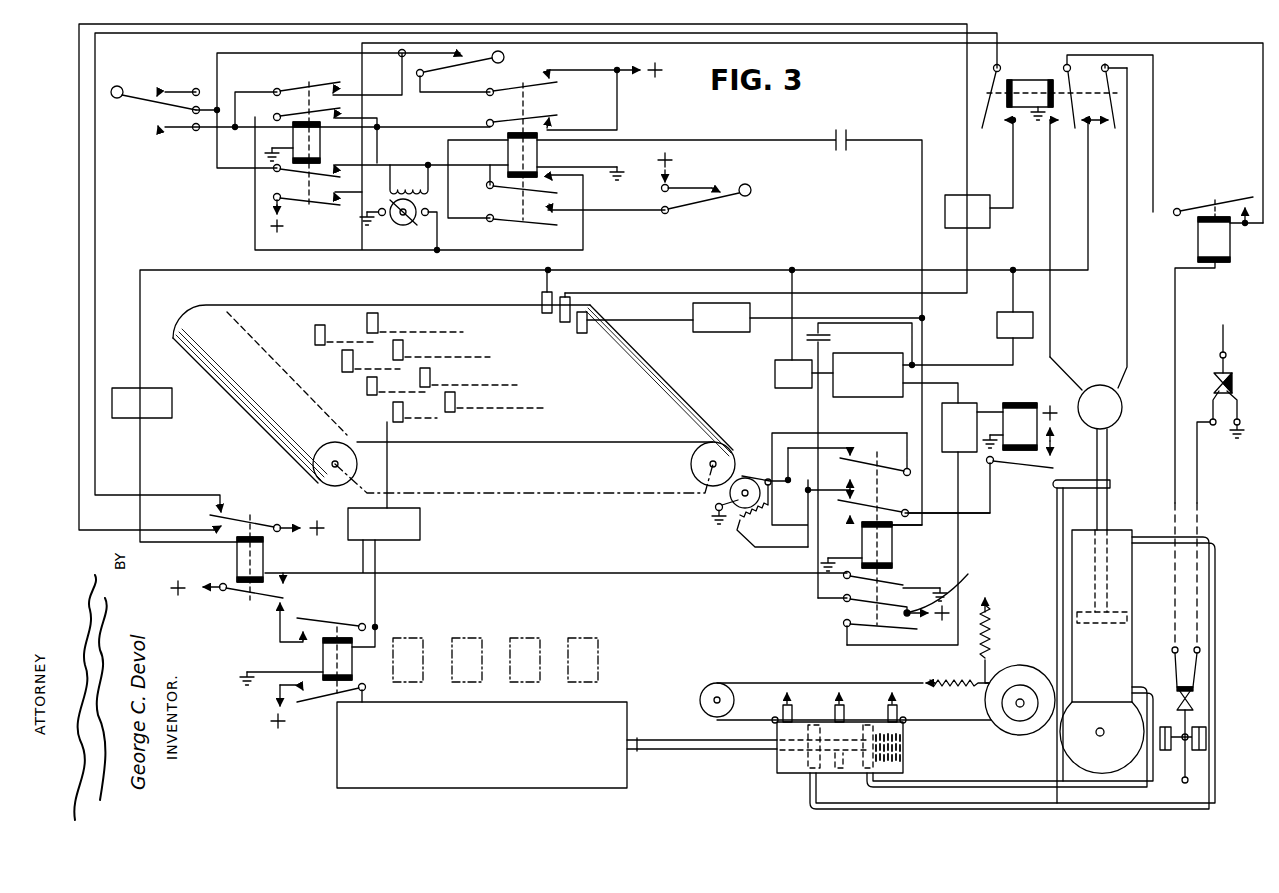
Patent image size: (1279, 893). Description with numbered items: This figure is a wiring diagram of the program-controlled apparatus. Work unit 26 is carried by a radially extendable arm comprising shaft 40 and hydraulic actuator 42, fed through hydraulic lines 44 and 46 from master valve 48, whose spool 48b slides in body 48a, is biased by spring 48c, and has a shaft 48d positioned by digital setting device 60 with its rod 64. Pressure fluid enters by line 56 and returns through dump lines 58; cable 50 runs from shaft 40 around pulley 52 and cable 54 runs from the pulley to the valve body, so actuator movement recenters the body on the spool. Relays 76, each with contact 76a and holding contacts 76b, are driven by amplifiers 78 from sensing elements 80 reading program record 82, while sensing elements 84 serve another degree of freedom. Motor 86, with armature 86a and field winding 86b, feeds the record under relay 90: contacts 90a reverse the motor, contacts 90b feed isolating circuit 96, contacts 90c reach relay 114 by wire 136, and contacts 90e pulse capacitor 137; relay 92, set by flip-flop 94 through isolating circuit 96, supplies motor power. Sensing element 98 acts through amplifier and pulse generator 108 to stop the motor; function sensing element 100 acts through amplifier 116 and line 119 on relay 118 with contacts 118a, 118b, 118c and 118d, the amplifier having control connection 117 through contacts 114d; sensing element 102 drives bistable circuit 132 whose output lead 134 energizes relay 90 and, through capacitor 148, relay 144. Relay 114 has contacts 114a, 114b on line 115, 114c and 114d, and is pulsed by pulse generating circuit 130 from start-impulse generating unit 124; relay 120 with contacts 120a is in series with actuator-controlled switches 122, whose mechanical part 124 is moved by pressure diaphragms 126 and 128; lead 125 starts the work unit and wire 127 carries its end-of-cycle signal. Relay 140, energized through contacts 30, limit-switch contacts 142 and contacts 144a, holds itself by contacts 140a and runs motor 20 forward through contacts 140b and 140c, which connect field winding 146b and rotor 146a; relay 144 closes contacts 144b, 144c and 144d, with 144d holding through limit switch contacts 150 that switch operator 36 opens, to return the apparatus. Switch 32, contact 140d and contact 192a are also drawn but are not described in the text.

The motor 20 is at (384, 229).
The work unit 26 is at (1116, 414).
The contacts 30 is at (155, 117).
The push button switch 32 is at (119, 88).
The switch operator 36 is at (743, 184).
The shaft 40 is at (1108, 456).
The hydraulic actuator 42 is at (1118, 535).
The hydraulic line 44 is at (1020, 786).
The hydraulic line 46 is at (968, 808).
The master valve 48 is at (770, 766).
The valve body 48a is at (902, 758).
The spool 48b is at (838, 768).
The spring 48c is at (902, 744).
The shaft 48d is at (690, 730).
The spring-tensioned cable 50 is at (1057, 582).
The pulley 52 is at (1004, 669).
The spring-tensioned cable 54 is at (949, 720).
The line 56 is at (832, 706).
The dump lines 58 is at (776, 714).
The digital setting device 60 is at (332, 765).
The rod 64 is at (642, 752).
The relay 76 is at (352, 664).
The relay contact 76a is at (300, 712).
The holding contacts 76b is at (306, 636).
The amplifier 78 is at (420, 528).
The sensing element 80 is at (320, 346).
The magnetic program record 82 is at (488, 439).
The sensing elements 84 is at (380, 326).
The electric motor 86 is at (750, 470).
The armature 86a is at (713, 502).
The field winding 86b is at (762, 516).
The relay 90 is at (888, 547).
The relay contacts 90a is at (864, 487).
The relay contacts 90b is at (848, 619).
The relay contacts 90c is at (902, 582).
The relay contacts 90e is at (954, 592).
The relay 92 is at (1020, 406).
The flip-flop 94 is at (870, 356).
The isolating circuit 96 is at (964, 407).
The sensing element 98 is at (540, 292).
The function sensing element 100 is at (560, 323).
The sensing element 102 is at (616, 324).
The amplifier and pulse generator 108 is at (774, 378).
The relay 114 is at (265, 556).
The relay contacts 114a is at (276, 602).
The relay contacts 114b is at (292, 594).
The contacts 114c is at (231, 508).
The contacts 114d is at (209, 516).
The line 115 is at (363, 562).
The amplifier 116 is at (969, 227).
The control connection 117 is at (966, 80).
The relay 118 is at (1030, 79).
The normally closed contacts 118a is at (1078, 150).
The normally open contacts 118b is at (1055, 140).
The normally open contacts 118c is at (1108, 130).
The holding contacts 118d is at (992, 128).
The line 119 is at (1014, 193).
The relay 120 is at (1222, 264).
The contacts 120a is at (1232, 198).
The actuator-controlled switch 122 is at (1185, 660).
The start-impulse generating unit 124 is at (996, 320).
The lead 125 is at (1054, 306).
The pressure diaphragm 126 is at (1163, 768).
The wire 127 is at (1130, 233).
The pressure diaphragm 128 is at (1206, 716).
The pulse generating circuit 130 is at (168, 418).
The bistable circuit 132 is at (714, 330).
The output lead 134 is at (860, 316).
The wire 136 is at (680, 576).
The capacitor 137 is at (803, 339).
The relay 140 is at (308, 142).
The contacts 140a is at (346, 88).
The relay contacts 140b is at (350, 104).
The contacts 140c is at (336, 181).
The relay contact 140d is at (346, 202).
The limit-switch contacts 142 is at (467, 70).
The relay 144 is at (508, 154).
The normally closed contacts 144a is at (550, 82).
The relay contacts 144b is at (572, 118).
The relay contacts 144c is at (562, 179).
The holding contacts 144d is at (562, 222).
The rotor 146a is at (400, 227).
The field winding 146b is at (402, 180).
The capacitor 148 is at (845, 131).
The limit switch contacts 150 is at (703, 210).
The relay contact 192a is at (1048, 462).